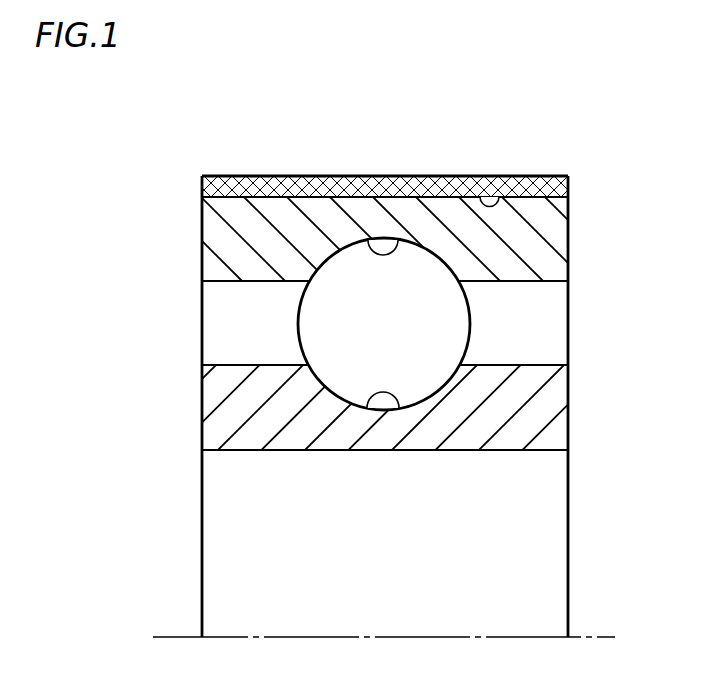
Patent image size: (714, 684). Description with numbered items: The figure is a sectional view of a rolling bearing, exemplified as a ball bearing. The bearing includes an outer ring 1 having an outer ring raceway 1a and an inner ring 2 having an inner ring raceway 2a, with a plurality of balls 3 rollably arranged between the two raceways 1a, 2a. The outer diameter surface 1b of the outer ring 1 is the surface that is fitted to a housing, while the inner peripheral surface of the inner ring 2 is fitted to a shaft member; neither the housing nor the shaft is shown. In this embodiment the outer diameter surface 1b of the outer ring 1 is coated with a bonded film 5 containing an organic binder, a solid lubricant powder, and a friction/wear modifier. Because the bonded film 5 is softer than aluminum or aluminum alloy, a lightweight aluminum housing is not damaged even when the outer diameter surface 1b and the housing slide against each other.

The outer ring 1 is at (226, 243).
The outer ring raceway 1a is at (373, 238).
The outer diameter surface 1b is at (495, 197).
The inner ring 2 is at (226, 411).
The inner ring raceway 2a is at (376, 410).
The balls 3 is at (445, 325).
The bonded film 5 is at (283, 176).